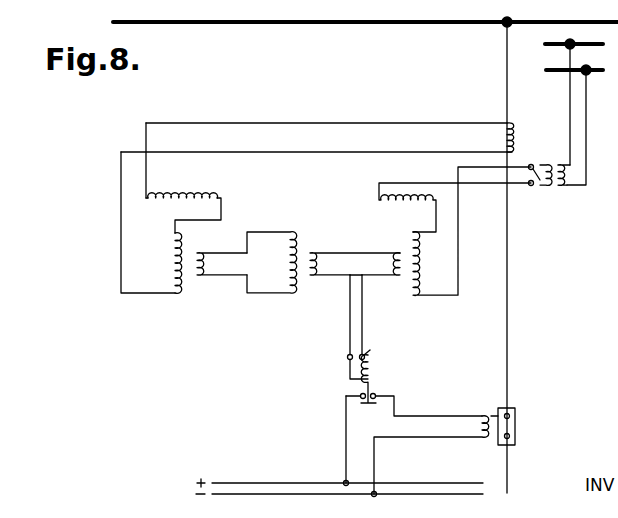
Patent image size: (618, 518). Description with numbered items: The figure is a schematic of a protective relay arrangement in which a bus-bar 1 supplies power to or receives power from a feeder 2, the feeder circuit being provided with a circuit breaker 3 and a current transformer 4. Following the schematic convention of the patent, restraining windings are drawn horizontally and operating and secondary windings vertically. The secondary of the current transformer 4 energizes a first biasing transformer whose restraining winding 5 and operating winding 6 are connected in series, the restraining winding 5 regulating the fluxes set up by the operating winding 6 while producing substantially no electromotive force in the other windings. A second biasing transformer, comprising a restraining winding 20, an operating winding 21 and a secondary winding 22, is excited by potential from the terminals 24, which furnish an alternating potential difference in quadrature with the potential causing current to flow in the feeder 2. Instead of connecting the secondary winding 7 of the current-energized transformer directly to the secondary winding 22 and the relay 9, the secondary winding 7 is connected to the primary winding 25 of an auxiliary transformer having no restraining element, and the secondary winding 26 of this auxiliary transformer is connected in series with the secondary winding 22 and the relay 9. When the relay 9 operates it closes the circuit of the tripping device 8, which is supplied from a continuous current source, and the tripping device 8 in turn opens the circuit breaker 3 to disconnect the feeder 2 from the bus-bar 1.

The bus-bar 1 is at (331, 25).
The feeder 2 is at (510, 324).
The circuit breaker 3 is at (517, 426).
The current transformer 4 is at (517, 142).
The restraining winding 5 is at (171, 206).
The operating winding 6 is at (175, 259).
The secondary winding 7 is at (205, 266).
The tripping device 8 is at (485, 415).
The relay 9 is at (375, 370).
The restraining winding 20 is at (400, 206).
The operating winding 21 is at (420, 283).
The secondary winding 22 is at (392, 265).
The potential terminals 24 is at (533, 185).
The primary winding 25 is at (286, 262).
The secondary winding 26 is at (318, 265).